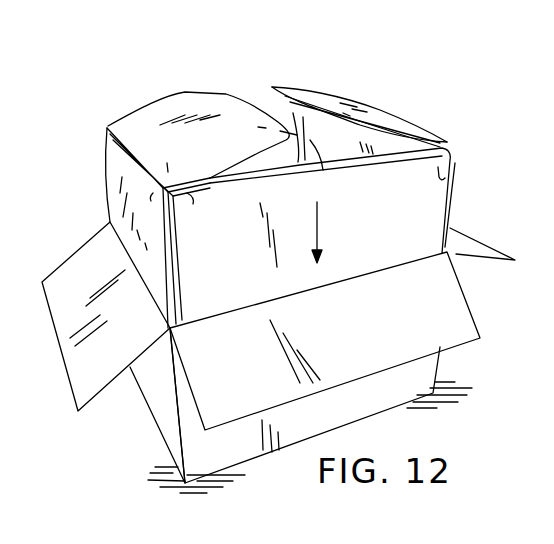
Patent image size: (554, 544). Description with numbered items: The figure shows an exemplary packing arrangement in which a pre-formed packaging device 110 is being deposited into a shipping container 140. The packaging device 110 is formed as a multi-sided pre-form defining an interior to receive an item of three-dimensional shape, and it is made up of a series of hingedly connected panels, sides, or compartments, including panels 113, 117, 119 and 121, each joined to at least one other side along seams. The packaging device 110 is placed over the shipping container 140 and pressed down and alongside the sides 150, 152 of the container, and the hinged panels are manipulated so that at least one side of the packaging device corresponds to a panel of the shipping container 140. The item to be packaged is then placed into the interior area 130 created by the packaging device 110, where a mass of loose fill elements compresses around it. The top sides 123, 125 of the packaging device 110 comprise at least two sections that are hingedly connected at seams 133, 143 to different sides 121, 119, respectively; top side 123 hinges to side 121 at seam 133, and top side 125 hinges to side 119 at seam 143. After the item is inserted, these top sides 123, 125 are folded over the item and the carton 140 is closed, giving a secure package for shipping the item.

The packaging device 110 is at (273, 172).
The panel 113 is at (302, 155).
The panel 117 is at (422, 212).
The panel 119 is at (118, 192).
The panel 121 is at (392, 147).
The top side 123 is at (375, 118).
The top side 125 is at (188, 108).
The interior area 130 is at (320, 153).
The seam 133 is at (443, 137).
The shipping container 140 is at (137, 430).
The seam 143 is at (113, 146).
The side of shipping container 150 is at (413, 388).
The side of shipping container 152 is at (157, 392).